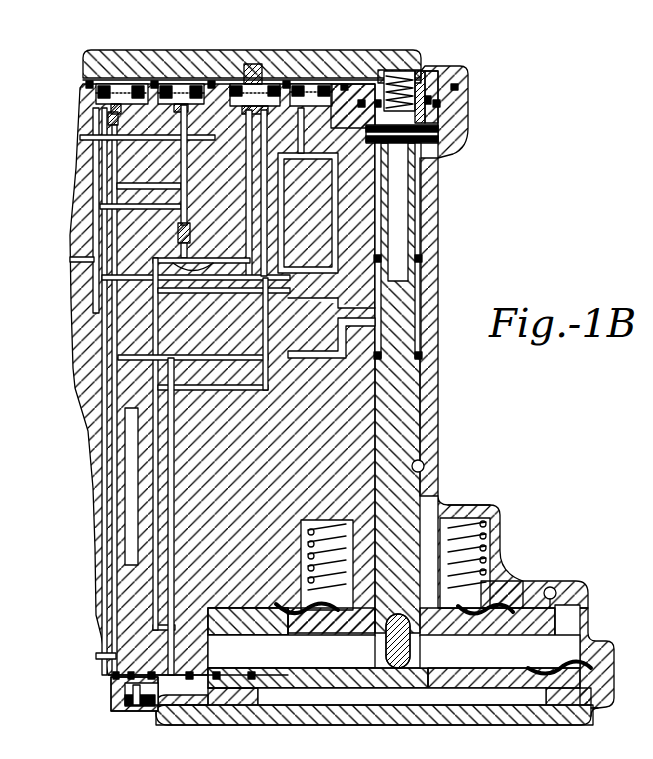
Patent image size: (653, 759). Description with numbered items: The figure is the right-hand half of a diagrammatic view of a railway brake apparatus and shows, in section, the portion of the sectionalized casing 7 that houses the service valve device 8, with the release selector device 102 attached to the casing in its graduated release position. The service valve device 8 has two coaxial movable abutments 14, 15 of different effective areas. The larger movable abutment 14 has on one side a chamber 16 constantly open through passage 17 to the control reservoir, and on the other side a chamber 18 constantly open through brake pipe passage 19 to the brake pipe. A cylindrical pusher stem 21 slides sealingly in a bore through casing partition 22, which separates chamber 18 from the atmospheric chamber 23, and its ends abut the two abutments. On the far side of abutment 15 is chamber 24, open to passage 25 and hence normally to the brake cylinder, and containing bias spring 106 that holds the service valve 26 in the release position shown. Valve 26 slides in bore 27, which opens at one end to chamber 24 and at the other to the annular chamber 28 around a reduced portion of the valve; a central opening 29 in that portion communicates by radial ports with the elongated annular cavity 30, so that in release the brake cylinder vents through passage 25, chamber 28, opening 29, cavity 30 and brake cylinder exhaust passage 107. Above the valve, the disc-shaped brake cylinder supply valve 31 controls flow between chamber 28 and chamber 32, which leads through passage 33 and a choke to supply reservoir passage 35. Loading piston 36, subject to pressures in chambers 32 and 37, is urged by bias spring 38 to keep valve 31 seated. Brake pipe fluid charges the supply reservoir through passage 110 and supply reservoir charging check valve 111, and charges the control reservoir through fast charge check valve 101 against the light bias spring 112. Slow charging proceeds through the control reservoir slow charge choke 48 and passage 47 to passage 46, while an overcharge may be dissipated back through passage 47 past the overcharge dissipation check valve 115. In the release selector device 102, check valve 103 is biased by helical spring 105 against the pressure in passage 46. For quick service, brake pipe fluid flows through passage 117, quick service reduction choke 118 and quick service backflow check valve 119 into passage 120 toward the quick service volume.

The sectionalized casing 7 is at (447, 380).
The service valve device 8 is at (442, 716).
The larger movable abutment 14 is at (586, 652).
The movable abutment 15 is at (515, 560).
The chamber 16 is at (483, 698).
The control reservoir passage 17 is at (72, 382).
The chamber 18 is at (570, 612).
The brake pipe passage 19 is at (72, 252).
The pusher stem 21 is at (404, 640).
The casing partition 22 is at (345, 642).
The atmospheric chamber 23 is at (478, 648).
The chamber 24 is at (468, 525).
The passage 25 is at (74, 205).
The service valve 26 is at (400, 420).
The bore 27 is at (417, 458).
The annular chamber 28 is at (432, 218).
The central opening 29 is at (405, 240).
The annular cavity 30 is at (416, 280).
The brake cylinder supply valve 31 is at (430, 128).
The chamber 32 is at (460, 107).
The passage 33 is at (76, 288).
The supply reservoir passage 35 is at (76, 268).
The loading piston 36 is at (440, 74).
The chamber 37 is at (413, 64).
The bias spring 38 is at (394, 62).
The passage 46 is at (72, 420).
The passage 47 is at (80, 176).
The control reservoir slow charge choke 48 is at (168, 224).
The control reservoir fast charge check valve 101 is at (272, 74).
The release selector device 102 is at (96, 682).
The check valve 103 is at (108, 693).
The helical spring 105 is at (128, 700).
The bias spring 106 is at (506, 500).
The brake cylinder exhaust passage 107 is at (74, 352).
The passage 110 is at (75, 142).
The supply reservoir charging check valve 111 is at (302, 78).
The bias spring 112 is at (242, 72).
The control reservoir overcharge dissipation check valve 115 is at (200, 78).
The passage 117 is at (90, 556).
The quick service reduction choke 118 is at (100, 110).
The quick service backflow check valve 119 is at (80, 80).
The passage 120 is at (72, 315).